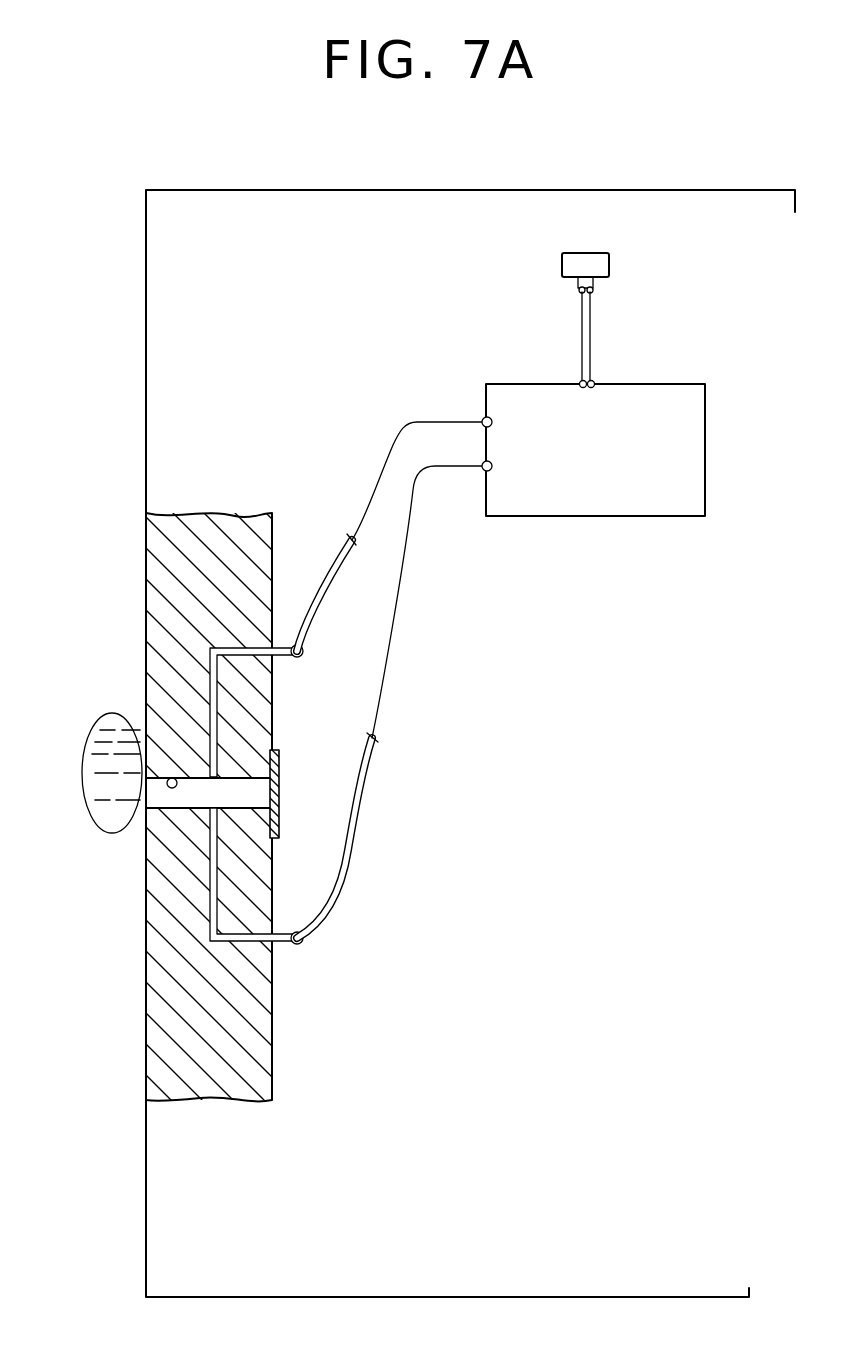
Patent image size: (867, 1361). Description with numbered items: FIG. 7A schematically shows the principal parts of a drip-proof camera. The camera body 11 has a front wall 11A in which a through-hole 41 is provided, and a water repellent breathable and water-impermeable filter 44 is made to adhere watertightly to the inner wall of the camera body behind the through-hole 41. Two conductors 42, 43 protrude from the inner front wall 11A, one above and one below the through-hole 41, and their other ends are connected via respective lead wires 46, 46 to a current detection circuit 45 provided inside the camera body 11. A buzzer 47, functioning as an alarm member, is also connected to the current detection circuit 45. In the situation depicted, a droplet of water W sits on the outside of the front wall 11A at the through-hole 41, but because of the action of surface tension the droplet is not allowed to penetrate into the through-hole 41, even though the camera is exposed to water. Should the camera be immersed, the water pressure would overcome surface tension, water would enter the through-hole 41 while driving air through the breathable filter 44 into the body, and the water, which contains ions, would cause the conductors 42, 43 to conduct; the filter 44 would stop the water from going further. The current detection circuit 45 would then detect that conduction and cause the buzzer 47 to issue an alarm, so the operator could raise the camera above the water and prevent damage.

The camera body 11 is at (308, 190).
The front wall 11A is at (146, 1040).
The through-hole 41 is at (168, 777).
The conductor 42 is at (225, 690).
The conductor 43 is at (220, 876).
The water repellent breathable and water-impermeable filter 44 is at (280, 766).
The current detection circuit 45 is at (693, 384).
The lead wire 46 is at (333, 573).
The buzzer 47 is at (601, 262).
The water W is at (102, 737).